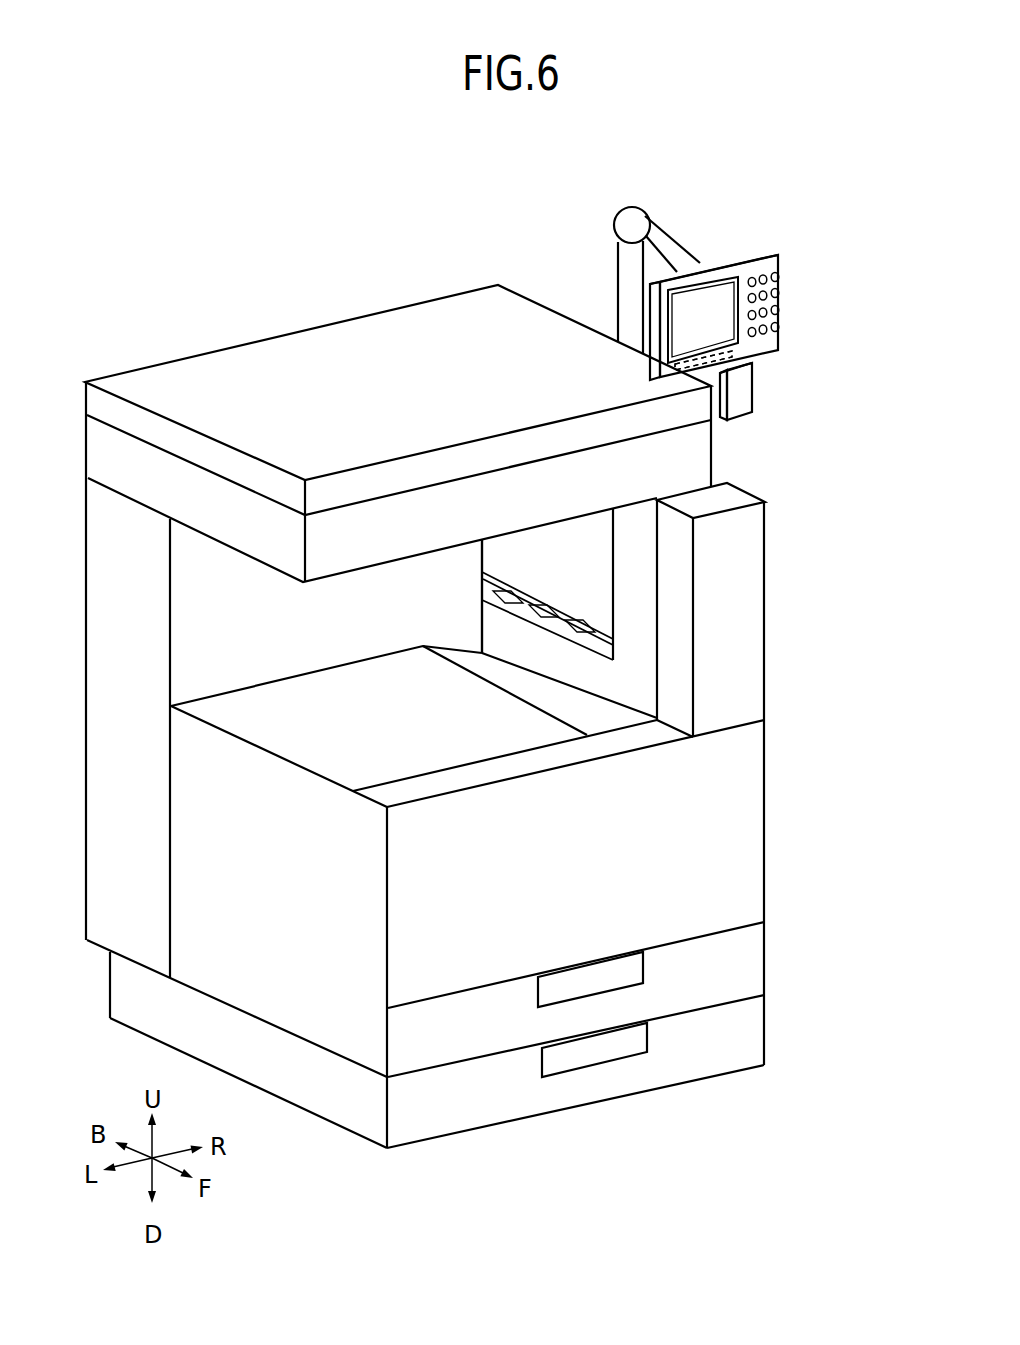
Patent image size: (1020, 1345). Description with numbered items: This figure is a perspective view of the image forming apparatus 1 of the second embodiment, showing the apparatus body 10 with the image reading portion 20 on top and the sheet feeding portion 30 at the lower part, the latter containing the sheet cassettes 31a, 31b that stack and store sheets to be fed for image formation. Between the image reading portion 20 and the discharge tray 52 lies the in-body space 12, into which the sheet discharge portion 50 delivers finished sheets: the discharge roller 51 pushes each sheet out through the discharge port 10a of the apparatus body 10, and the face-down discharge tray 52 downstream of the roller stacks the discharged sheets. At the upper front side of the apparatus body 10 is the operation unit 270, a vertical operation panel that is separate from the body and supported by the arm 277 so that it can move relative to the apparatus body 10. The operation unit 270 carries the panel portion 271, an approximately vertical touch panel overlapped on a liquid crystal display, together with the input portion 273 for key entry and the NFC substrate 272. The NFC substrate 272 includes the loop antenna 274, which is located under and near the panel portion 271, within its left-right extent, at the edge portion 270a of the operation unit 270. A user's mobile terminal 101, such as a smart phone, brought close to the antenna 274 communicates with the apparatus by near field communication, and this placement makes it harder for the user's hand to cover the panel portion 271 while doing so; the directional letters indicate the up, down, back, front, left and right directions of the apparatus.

The image forming apparatus 1 is at (250, 250).
The apparatus body 10 is at (752, 745).
The discharge port 10a is at (500, 619).
The in-body space 12 is at (190, 660).
The image reading portion 20 is at (425, 285).
The sheet feeding portion 30 is at (795, 925).
The sheet cassette 31a is at (752, 963).
The sheet cassette 31b is at (752, 1042).
The sheet discharge portion 50 is at (303, 745).
The discharge roller 51 is at (525, 588).
The discharge tray 52 is at (388, 680).
The mobile terminal 101 is at (752, 407).
The operation unit 270 is at (833, 248).
The edge portion 270a is at (763, 362).
The panel portion 271 is at (705, 293).
The NFC substrate 272 is at (676, 373).
The input portion 273 is at (780, 313).
The antenna 274 is at (655, 378).
The arm 277 is at (617, 276).